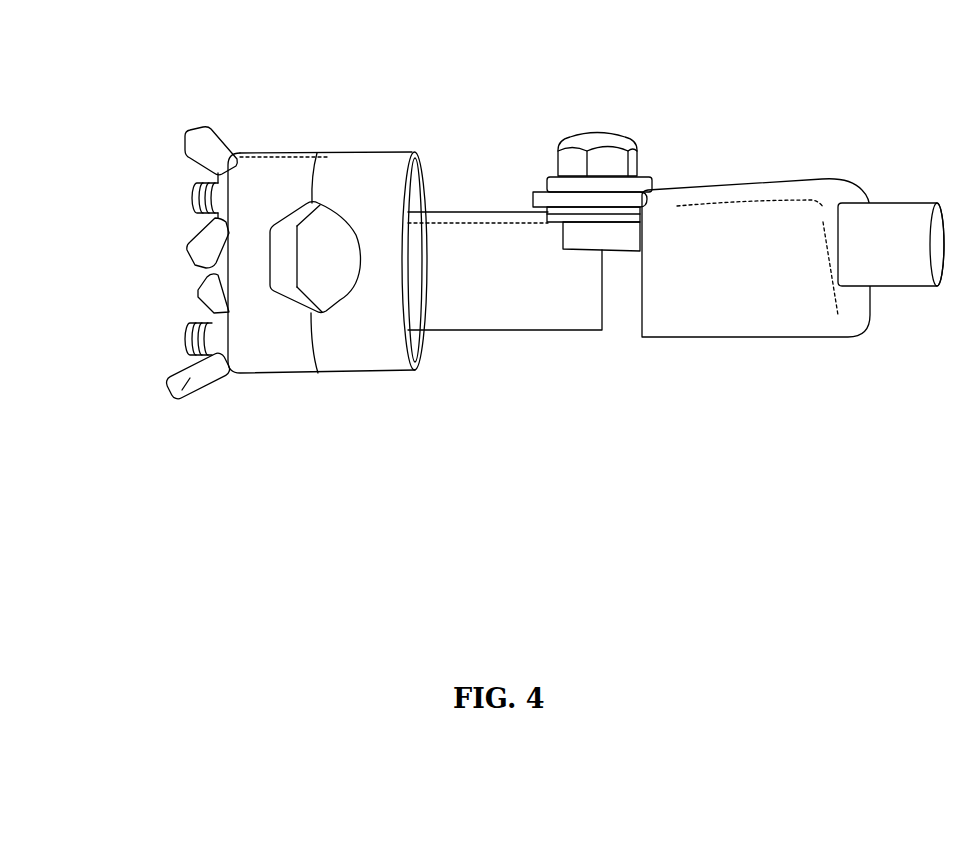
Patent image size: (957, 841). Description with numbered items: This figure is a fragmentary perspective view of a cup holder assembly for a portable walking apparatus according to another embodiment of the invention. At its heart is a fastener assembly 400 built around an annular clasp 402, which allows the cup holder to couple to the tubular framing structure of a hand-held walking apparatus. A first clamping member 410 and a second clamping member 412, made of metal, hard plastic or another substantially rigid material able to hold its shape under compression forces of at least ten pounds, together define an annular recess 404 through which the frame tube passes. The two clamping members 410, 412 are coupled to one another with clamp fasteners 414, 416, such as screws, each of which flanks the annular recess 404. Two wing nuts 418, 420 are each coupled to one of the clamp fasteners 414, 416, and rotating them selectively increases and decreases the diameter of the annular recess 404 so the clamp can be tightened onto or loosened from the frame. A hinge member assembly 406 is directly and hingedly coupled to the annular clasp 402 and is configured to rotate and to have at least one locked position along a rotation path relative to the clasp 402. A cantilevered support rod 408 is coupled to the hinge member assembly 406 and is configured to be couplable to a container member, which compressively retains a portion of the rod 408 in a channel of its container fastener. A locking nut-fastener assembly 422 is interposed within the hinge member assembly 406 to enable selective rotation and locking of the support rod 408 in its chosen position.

The fastener assembly 400 is at (494, 265).
The annular clasp 402 is at (363, 168).
The annular recess 404 is at (318, 263).
The hinge member assembly 406 is at (526, 163).
The cantilevered support rod 408 is at (891, 222).
The first clamping member 410 is at (257, 180).
The second clamping member 412 is at (388, 162).
The clamp fastener 414 is at (190, 183).
The clamp fastener 416 is at (185, 342).
The wing nut 418 is at (210, 143).
The wing nut 420 is at (172, 394).
The locking nut-fastener assembly 422 is at (648, 143).